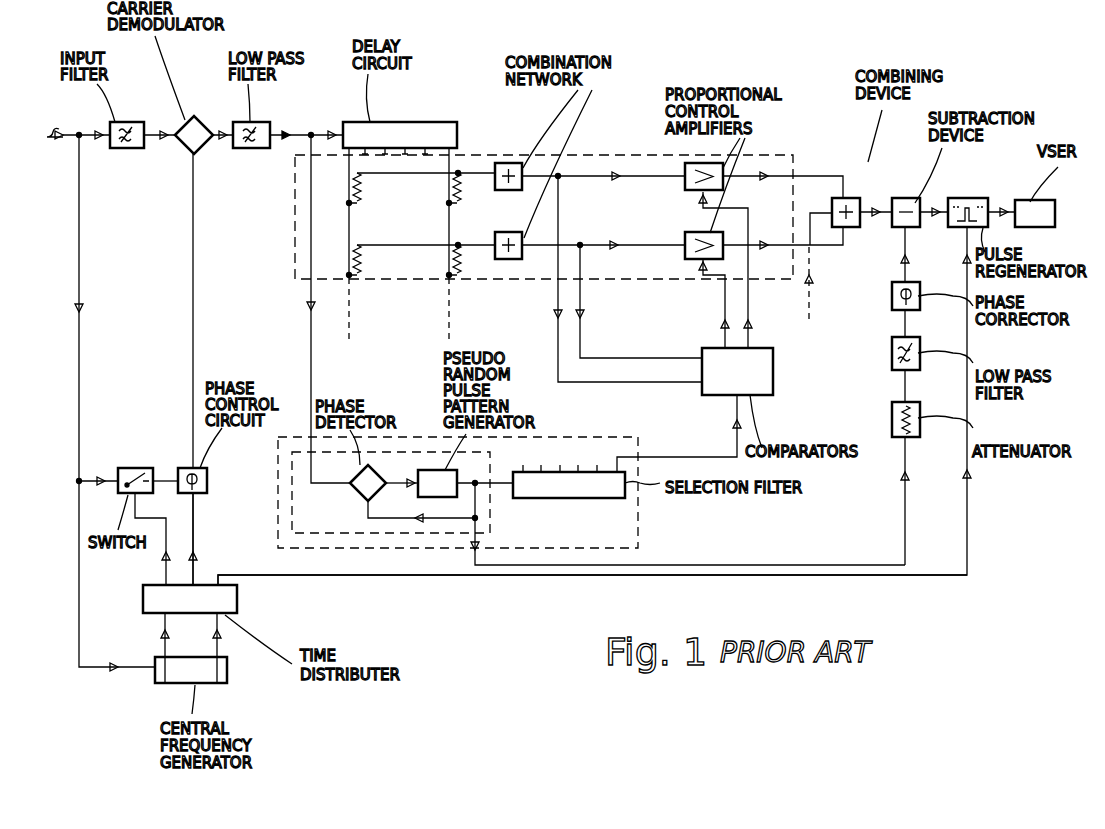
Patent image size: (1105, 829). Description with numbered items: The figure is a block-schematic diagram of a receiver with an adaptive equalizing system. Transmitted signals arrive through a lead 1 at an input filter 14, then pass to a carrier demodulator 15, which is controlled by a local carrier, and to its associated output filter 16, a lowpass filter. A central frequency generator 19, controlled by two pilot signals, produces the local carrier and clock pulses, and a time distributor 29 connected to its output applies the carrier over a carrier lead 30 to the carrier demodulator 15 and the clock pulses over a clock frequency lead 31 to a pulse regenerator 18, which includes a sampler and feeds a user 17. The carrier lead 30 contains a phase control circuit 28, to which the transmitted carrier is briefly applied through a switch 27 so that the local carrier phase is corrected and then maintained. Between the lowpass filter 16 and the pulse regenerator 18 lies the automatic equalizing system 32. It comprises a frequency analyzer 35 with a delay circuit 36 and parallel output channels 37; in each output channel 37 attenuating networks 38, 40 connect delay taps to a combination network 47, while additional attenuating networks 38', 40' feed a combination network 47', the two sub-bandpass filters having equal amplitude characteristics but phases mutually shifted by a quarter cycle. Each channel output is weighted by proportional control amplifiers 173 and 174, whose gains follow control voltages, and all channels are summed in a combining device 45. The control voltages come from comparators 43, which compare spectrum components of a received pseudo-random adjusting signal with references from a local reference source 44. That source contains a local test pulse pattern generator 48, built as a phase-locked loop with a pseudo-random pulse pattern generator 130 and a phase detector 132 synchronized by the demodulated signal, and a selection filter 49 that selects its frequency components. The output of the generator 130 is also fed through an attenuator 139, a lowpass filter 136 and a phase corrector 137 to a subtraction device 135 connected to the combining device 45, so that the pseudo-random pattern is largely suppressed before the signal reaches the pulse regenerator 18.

The lead 1 is at (52, 134).
The input filter 14 is at (135, 124).
The carrier demodulator 15 is at (201, 127).
The output filter 16 is at (262, 124).
The frequency analyzer 35 is at (408, 116).
The delay circuit 36 is at (455, 130).
The automatic equalizing system 32 is at (636, 116).
The output channel 37 is at (797, 164).
The attenuating network 38 is at (374, 194).
The attenuating network 40 is at (475, 194).
The combination network 47 is at (523, 189).
The attenuating network 38' is at (377, 263).
The attenuating network 40' is at (476, 263).
The combination network 47' is at (524, 257).
The proportional control amplifier 173 is at (690, 191).
The proportional control amplifier 174 is at (688, 246).
The combining device 45 is at (848, 198).
The subtraction device 135 is at (910, 198).
The pulse regenerator 18 is at (976, 198).
The user 17 is at (1030, 200).
The phase corrector 137 is at (892, 301).
The lowpass filter 136 is at (892, 363).
The attenuator 139 is at (892, 428).
The comparators 43 is at (765, 382).
The switch 27 is at (123, 468).
The phase control circuit 28 is at (178, 468).
The carrier lead 30 is at (195, 522).
The time distributor 29 is at (232, 604).
The central frequency generator 19 is at (222, 670).
The clock frequency lead 31 is at (372, 575).
The phase detector 132 is at (359, 493).
The pseudo-random pulse pattern generator 130 is at (426, 491).
The local test pulse pattern generator 48 is at (490, 508).
The selection filter 49 is at (574, 493).
The local reference source 44 is at (638, 505).